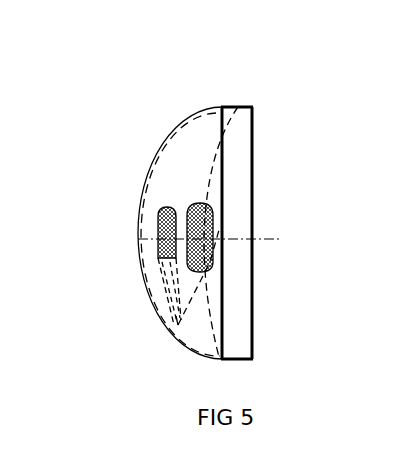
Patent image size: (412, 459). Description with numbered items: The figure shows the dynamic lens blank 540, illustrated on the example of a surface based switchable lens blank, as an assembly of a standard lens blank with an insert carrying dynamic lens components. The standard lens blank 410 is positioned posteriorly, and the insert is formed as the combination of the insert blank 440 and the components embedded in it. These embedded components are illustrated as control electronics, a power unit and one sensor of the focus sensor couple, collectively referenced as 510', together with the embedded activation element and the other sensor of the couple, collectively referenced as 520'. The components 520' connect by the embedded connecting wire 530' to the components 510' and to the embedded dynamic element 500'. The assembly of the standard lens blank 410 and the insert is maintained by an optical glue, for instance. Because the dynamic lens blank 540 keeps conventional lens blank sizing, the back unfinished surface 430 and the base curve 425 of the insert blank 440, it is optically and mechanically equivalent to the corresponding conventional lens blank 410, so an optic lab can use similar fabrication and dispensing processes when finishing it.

The dynamic lens blank 540 is at (230, 77).
The insert blank 440 is at (163, 145).
The base curve 425 is at (140, 205).
The standard lens blank 410 is at (237, 153).
The back unfinished surface 430 is at (253, 348).
The embedded control electronics, power unit and focus sensor 510' is at (282, 232).
The embedded activation and sensor 520' is at (104, 266).
The embedded connecting wire 530' is at (277, 259).
The embedded dynamic element 500' is at (127, 305).